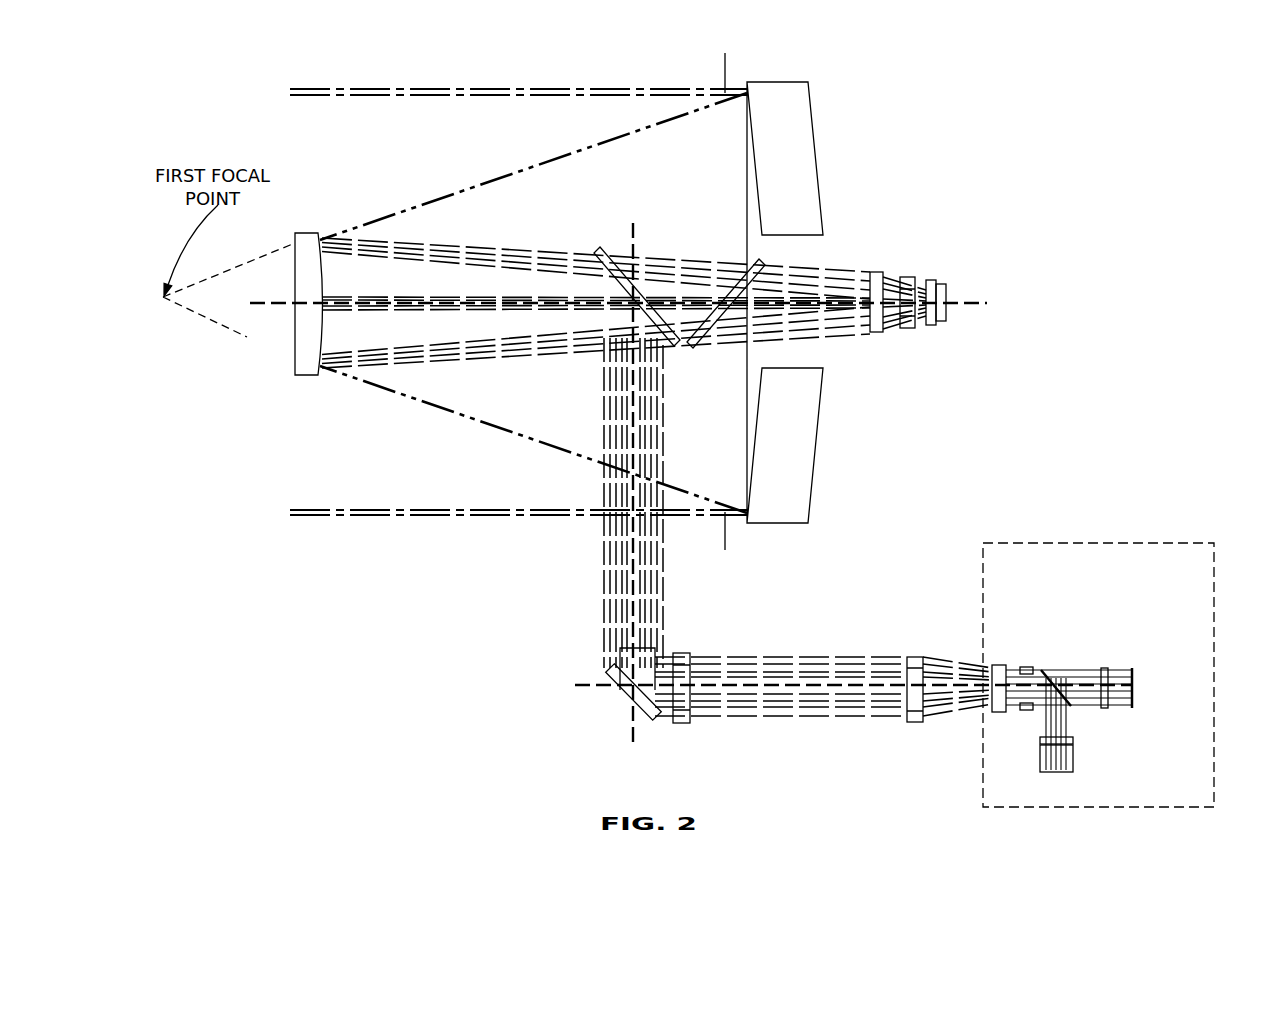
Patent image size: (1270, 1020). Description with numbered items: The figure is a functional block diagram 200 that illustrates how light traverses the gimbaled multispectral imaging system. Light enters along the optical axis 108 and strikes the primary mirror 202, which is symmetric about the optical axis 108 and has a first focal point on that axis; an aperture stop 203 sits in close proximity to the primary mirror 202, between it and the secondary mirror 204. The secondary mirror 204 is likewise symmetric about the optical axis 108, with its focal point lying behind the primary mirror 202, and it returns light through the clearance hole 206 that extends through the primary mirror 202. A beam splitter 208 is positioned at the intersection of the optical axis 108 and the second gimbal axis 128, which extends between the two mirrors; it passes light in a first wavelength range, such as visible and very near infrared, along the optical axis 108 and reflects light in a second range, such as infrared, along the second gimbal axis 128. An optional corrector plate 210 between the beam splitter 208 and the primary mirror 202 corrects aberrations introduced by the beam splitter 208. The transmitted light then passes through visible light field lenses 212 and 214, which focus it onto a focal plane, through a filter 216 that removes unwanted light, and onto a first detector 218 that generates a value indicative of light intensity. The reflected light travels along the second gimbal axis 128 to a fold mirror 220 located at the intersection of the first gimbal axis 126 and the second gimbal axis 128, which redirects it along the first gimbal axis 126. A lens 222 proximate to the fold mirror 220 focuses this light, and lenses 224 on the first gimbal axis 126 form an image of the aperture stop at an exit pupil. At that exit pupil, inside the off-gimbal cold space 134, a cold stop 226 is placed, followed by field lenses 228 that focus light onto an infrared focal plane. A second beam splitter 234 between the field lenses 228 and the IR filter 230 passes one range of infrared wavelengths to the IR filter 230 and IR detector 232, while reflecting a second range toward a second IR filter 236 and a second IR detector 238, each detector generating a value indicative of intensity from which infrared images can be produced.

The functional block diagram 200 is at (1003, 138).
The primary mirror 202 is at (819, 190).
The aperture stop 203 is at (727, 62).
The secondary mirror 204 is at (293, 360).
The clearance hole 206 is at (840, 355).
The beam splitter 208 is at (645, 338).
The corrector plate 210 is at (748, 268).
The visible light field lens 212 is at (877, 275).
The visible light field lens 214 is at (910, 328).
The filter 216 is at (930, 280).
The first detector 218 is at (948, 308).
The fold mirror 220 is at (625, 700).
The lens 222 is at (683, 655).
The lenses 224 is at (918, 658).
The cold stop 226 is at (980, 714).
The field lenses 228 is at (1028, 666).
The IR filter 230 is at (1105, 668).
The IR detector 232 is at (1135, 680).
The second beam splitter 234 is at (1068, 703).
The second IR filter 236 is at (1040, 740).
The second IR detector 238 is at (1055, 772).
The optical axis 108 is at (355, 305).
The first gimbal axis 126 is at (588, 683).
The second gimbal axis 128 is at (633, 592).
The cold space 134 is at (1108, 543).